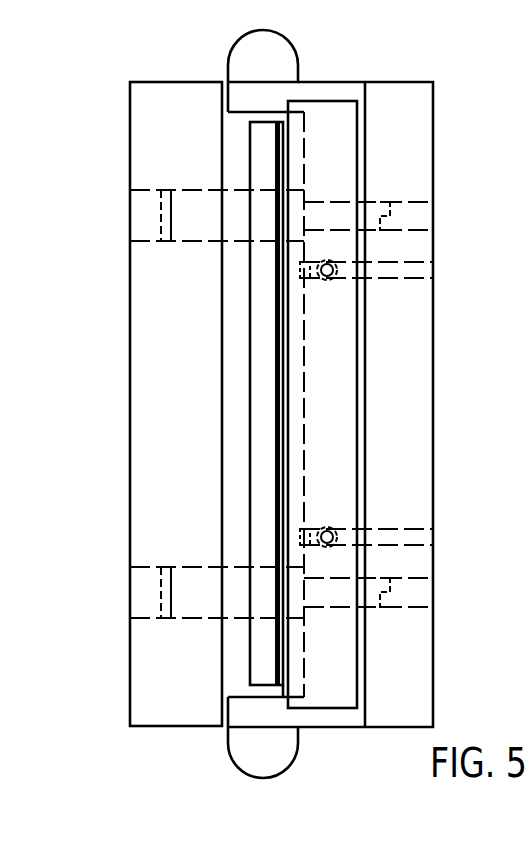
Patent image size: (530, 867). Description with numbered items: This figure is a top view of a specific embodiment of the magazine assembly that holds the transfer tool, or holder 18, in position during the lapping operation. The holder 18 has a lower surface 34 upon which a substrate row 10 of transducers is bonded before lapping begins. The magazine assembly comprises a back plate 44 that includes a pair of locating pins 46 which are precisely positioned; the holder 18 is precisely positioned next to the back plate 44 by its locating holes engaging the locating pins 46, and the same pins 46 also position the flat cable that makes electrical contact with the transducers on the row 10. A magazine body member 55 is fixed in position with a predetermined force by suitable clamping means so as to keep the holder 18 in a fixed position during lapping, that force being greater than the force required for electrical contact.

The substrate row 10 is at (262, 673).
The holder 18 is at (235, 655).
The lower surface 34 is at (233, 542).
The back plate 44 is at (155, 343).
The locating pins 46 is at (182, 223).
The magazine body member 55 is at (412, 497).